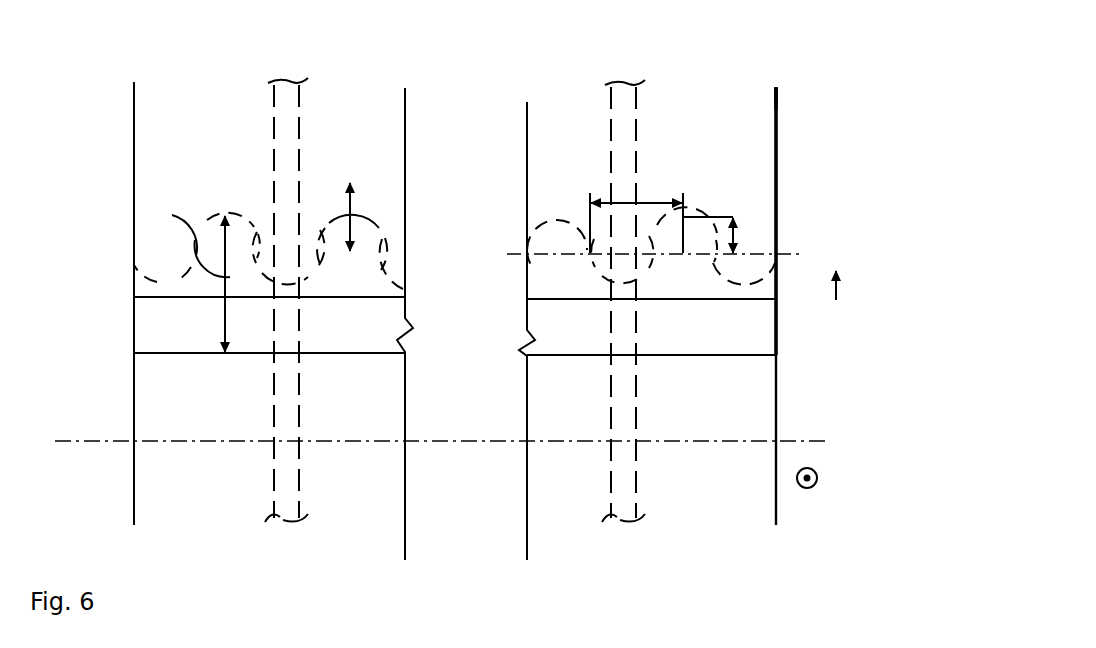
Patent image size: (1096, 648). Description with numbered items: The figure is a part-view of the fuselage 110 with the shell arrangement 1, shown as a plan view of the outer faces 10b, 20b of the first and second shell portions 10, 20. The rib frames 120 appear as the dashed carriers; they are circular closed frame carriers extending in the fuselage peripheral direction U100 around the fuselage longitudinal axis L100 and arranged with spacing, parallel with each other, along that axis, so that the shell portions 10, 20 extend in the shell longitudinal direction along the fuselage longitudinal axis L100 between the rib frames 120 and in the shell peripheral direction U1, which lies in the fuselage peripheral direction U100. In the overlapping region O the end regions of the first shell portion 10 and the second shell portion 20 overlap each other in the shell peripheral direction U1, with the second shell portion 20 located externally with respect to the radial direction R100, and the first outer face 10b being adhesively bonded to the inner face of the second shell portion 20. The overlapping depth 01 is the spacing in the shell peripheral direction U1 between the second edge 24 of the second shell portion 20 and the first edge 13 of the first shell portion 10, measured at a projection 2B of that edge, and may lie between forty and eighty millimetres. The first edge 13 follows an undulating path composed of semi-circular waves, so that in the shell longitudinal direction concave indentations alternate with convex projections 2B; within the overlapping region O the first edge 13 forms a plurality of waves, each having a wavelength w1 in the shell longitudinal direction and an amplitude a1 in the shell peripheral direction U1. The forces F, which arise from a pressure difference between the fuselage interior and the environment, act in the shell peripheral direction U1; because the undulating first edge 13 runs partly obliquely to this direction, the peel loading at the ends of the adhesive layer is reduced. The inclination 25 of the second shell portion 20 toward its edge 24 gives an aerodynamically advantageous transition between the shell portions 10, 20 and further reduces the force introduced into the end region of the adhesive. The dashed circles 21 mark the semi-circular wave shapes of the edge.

The second shell portion 20 is at (134, 143).
The outer face of the second shell portion 20b is at (177, 104).
The first shell portion 10 is at (132, 483).
The outer face of the first shell portion 10b is at (180, 503).
The inclination 25 is at (150, 333).
The second edge 24 is at (544, 359).
The overlapping region O is at (427, 310).
The rib frames 120 is at (298, 492).
The overlapping depth 01 is at (173, 238).
The opening edge 21 is at (163, 276).
The projections 2B is at (226, 210).
The first edge 13 is at (539, 222).
The forces F is at (346, 200).
The wavelength w1 is at (657, 190).
The amplitude a1 is at (742, 215).
The shell arrangement 1 is at (847, 81).
The fuselage 110 is at (821, 105).
The shell peripheral direction U1 is at (884, 285).
The fuselage peripheral direction U100 is at (836, 290).
The fuselage longitudinal axis L100 is at (815, 443).
The radial direction R100 is at (818, 478).